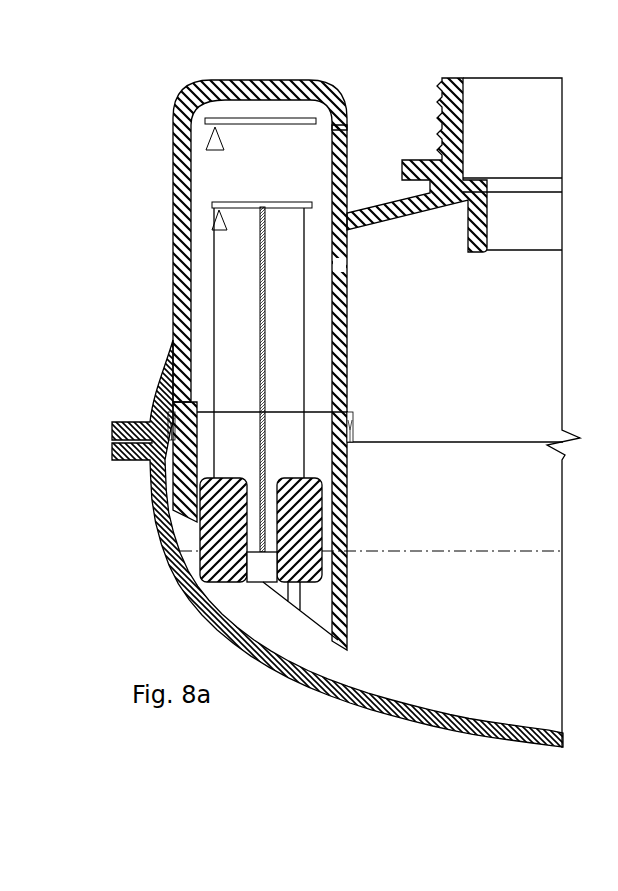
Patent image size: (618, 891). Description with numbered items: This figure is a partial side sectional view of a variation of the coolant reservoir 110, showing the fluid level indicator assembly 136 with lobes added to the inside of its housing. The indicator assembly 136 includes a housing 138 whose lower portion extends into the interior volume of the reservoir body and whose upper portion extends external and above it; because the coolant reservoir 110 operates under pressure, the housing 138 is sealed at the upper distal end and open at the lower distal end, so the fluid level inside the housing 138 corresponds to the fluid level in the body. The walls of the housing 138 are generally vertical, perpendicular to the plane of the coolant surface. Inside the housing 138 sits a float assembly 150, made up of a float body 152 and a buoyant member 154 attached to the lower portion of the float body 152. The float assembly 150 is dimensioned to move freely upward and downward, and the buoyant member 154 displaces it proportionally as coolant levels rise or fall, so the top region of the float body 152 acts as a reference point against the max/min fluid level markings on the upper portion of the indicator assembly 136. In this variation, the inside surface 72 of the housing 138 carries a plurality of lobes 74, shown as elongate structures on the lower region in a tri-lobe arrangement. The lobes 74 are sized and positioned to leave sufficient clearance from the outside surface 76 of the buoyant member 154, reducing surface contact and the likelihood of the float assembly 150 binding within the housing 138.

The coolant reservoir 110 is at (380, 95).
The fluid level indicator assembly 136 is at (152, 170).
The housing 138 is at (344, 322).
The float assembly 150 is at (207, 288).
The float body 152 is at (289, 352).
The buoyant member 154 is at (307, 533).
The inside surface 72 is at (203, 242).
The lobes 74 is at (192, 457).
The outside surface 76 is at (200, 532).